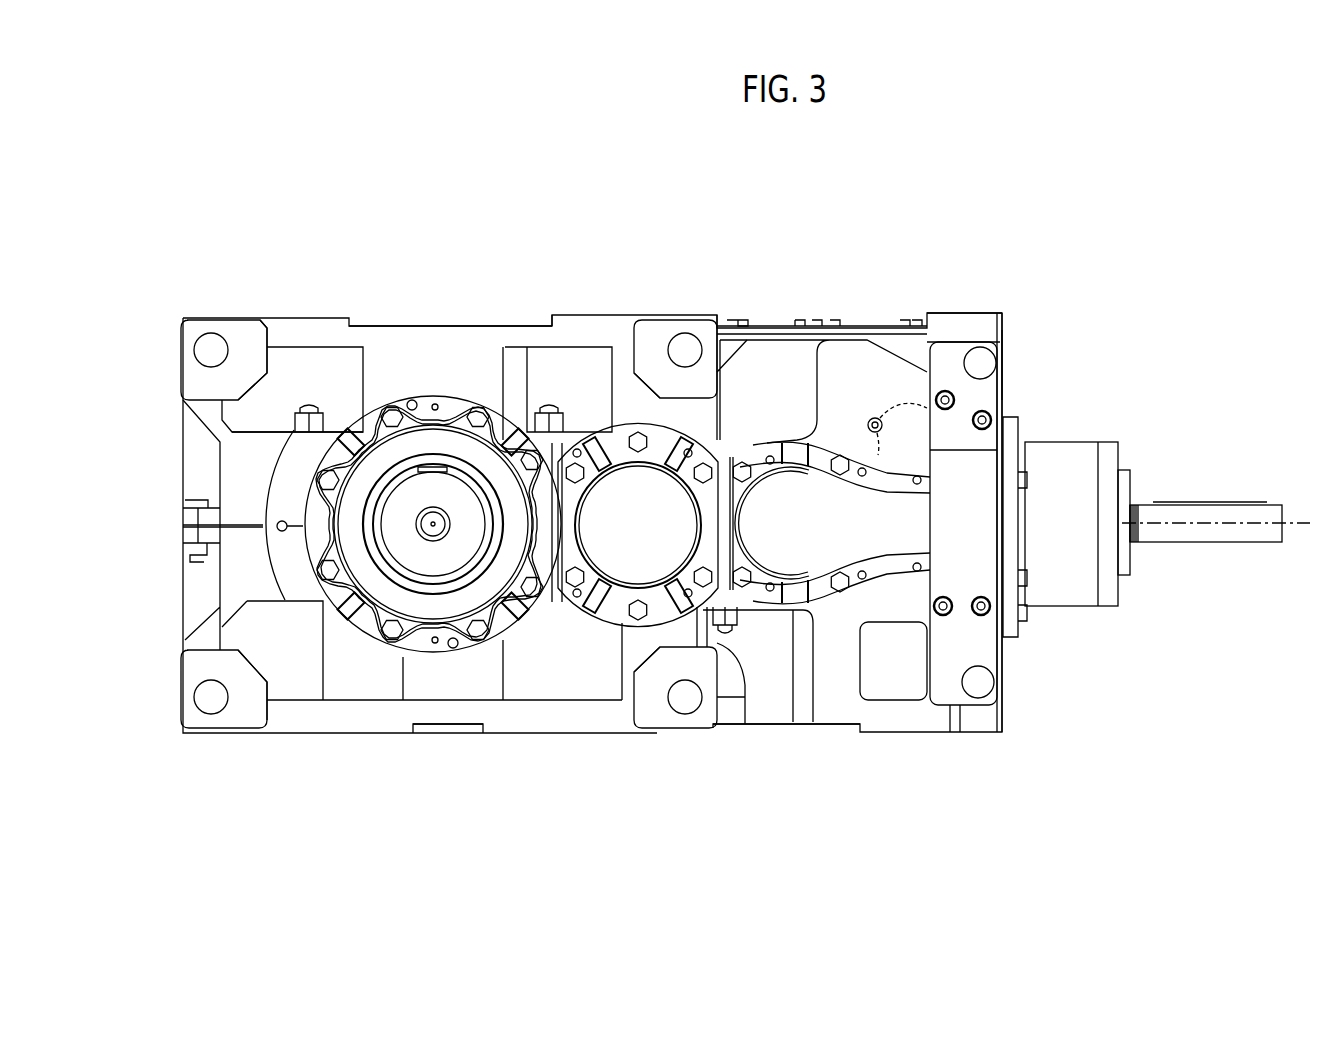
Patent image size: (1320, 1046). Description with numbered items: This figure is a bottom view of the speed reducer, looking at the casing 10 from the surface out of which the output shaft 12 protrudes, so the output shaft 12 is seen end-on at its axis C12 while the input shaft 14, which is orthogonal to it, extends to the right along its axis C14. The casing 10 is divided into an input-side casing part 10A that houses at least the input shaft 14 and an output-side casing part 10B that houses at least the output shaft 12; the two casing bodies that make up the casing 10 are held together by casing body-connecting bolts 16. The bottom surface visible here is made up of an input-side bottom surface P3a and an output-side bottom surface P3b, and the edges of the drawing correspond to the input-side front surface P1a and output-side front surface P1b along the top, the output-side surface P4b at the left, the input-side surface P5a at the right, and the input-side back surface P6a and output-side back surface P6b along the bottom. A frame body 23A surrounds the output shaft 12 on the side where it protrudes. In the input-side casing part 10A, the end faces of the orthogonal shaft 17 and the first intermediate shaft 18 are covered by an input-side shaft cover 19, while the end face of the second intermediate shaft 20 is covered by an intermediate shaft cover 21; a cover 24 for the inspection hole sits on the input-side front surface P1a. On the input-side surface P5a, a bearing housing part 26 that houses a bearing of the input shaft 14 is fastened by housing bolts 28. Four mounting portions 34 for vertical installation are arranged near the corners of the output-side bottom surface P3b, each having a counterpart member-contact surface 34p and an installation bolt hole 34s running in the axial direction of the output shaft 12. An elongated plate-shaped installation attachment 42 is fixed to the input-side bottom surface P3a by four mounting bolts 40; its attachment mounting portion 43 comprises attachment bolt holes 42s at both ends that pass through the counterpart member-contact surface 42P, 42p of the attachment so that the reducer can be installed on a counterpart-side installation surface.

The casing 10 is at (1028, 218).
The input-side casing part 10A is at (813, 326).
The output-side casing part 10B is at (519, 318).
The output shaft 12 is at (427, 560).
The axis of the output shaft C12 is at (437, 527).
The input shaft 14 is at (1213, 506).
The axis of the input shaft C14 is at (1297, 520).
The casing body-connecting bolts 16 is at (309, 408).
The orthogonal shaft 17 is at (905, 533).
The first intermediate shaft 18 is at (797, 543).
The input-side shaft cover 19 is at (860, 540).
The second intermediate shaft 20 is at (665, 515).
The intermediate shaft cover 21 is at (628, 495).
The frame body 23A is at (406, 410).
The cover 24 is at (863, 326).
The bearing housing part 26 is at (1073, 450).
The housing bolts 28 is at (1027, 612).
The mounting portions for vertical installation 34 is at (186, 318).
The installation bolt hole 34s is at (212, 345).
The counterpart member-contact surface 34p is at (248, 350).
The mounting bolts 40 is at (988, 420).
The installation attachment 42 is at (975, 447).
The counterpart member-contact surface 42P is at (940, 355).
The counterpart member-contact surface 42p is at (940, 690).
The attachment bolt holes 42s is at (983, 365).
The attachment mounting portion 43 is at (972, 350).
The input-side front surface P1a is at (780, 333).
The output-side front surface P1b is at (432, 324).
The input-side bottom surface P3a is at (873, 402).
The output-side bottom surface P3b is at (463, 377).
The output-side surface P4b is at (181, 570).
The input-side surface P5a is at (1005, 343).
The input-side back surface P6a is at (827, 732).
The output-side back surface P6b is at (397, 735).